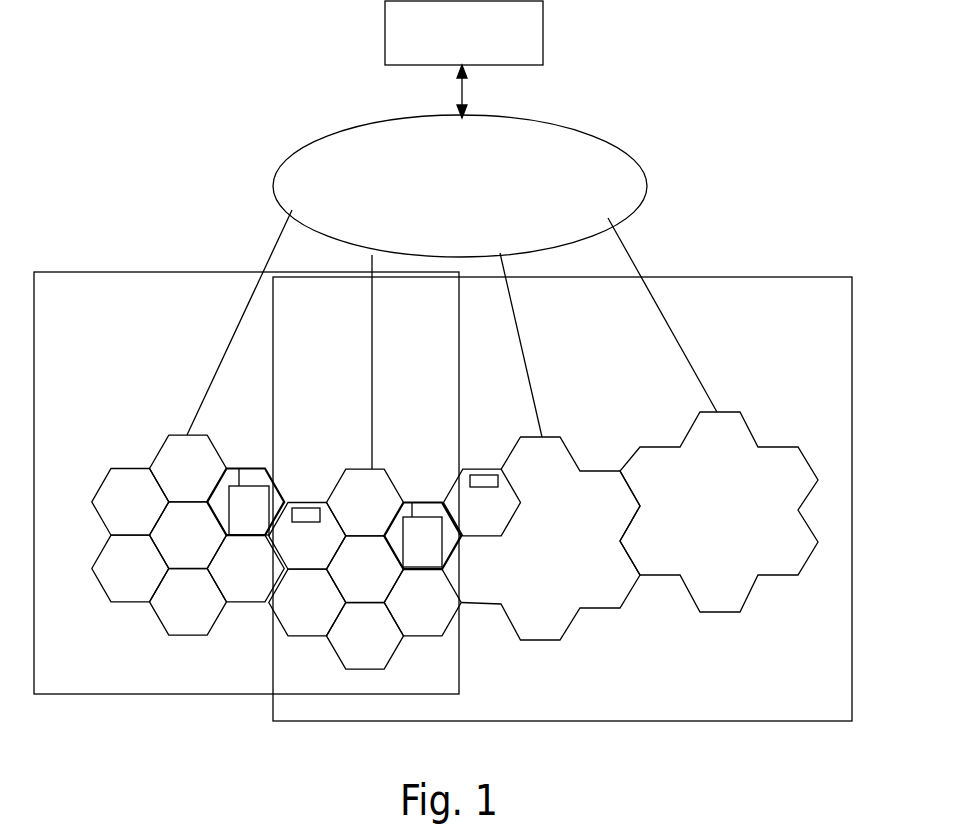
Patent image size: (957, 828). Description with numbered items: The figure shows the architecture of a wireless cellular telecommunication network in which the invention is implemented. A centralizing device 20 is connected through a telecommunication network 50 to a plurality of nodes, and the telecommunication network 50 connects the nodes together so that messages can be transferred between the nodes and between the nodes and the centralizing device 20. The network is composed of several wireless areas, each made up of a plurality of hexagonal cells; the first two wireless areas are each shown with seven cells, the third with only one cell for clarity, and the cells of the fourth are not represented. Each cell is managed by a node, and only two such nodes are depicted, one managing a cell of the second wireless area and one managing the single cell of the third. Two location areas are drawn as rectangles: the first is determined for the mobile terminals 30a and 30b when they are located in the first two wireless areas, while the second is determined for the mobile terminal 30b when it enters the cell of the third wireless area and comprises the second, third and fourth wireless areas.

The centralizing device 20 is at (387, 42).
The telecommunication network 50 is at (372, 138).
The mobile terminal 30a is at (250, 502).
The mobile terminal 30b is at (423, 535).